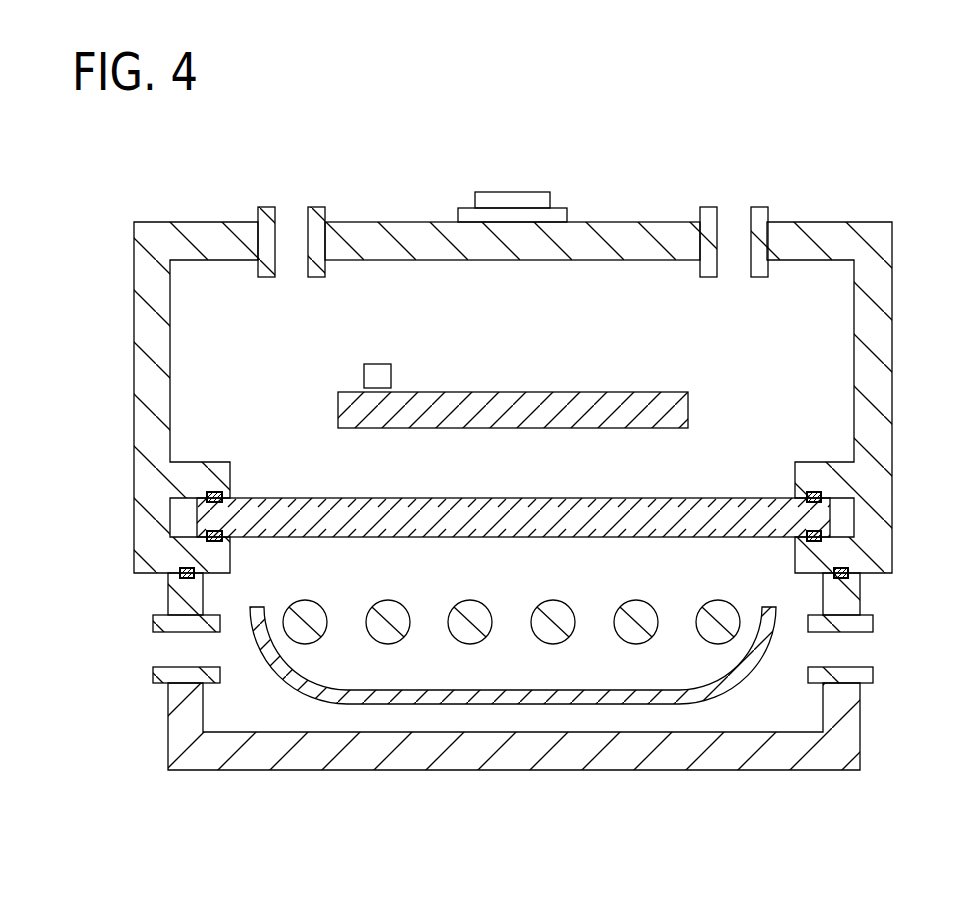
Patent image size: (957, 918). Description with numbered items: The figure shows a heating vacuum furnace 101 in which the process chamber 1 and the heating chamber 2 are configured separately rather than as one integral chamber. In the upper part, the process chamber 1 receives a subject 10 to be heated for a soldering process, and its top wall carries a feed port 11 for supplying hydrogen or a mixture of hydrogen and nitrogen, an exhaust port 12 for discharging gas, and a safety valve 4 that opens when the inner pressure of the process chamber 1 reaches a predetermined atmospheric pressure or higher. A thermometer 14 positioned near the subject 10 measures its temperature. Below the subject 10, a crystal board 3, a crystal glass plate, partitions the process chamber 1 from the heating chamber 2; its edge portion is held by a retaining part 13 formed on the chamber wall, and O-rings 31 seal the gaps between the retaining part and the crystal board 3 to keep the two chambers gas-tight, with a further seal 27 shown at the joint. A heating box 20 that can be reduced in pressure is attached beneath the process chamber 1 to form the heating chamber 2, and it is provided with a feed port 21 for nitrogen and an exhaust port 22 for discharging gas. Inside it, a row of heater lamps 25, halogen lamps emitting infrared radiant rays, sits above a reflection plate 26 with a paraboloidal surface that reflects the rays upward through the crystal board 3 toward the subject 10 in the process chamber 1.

The heat treatment apparatus 101 is at (673, 123).
The process chamber 1 is at (203, 350).
The heating chamber 2 is at (257, 697).
The crystal board 3 is at (680, 498).
The safety valve 4 is at (528, 192).
The subject 10 is at (596, 390).
The feed port 11 is at (733, 213).
The exhaust port 12 is at (293, 213).
The retaining part 13 is at (817, 460).
The thermometer 14 is at (365, 372).
The heating box 20 is at (722, 770).
The feed port 21 is at (868, 650).
The exhaust port 22 is at (150, 648).
The heater lamps 25 is at (630, 633).
The reflection plate 26 is at (408, 698).
The seal member 27 is at (847, 572).
The O-rings 31 is at (207, 492).